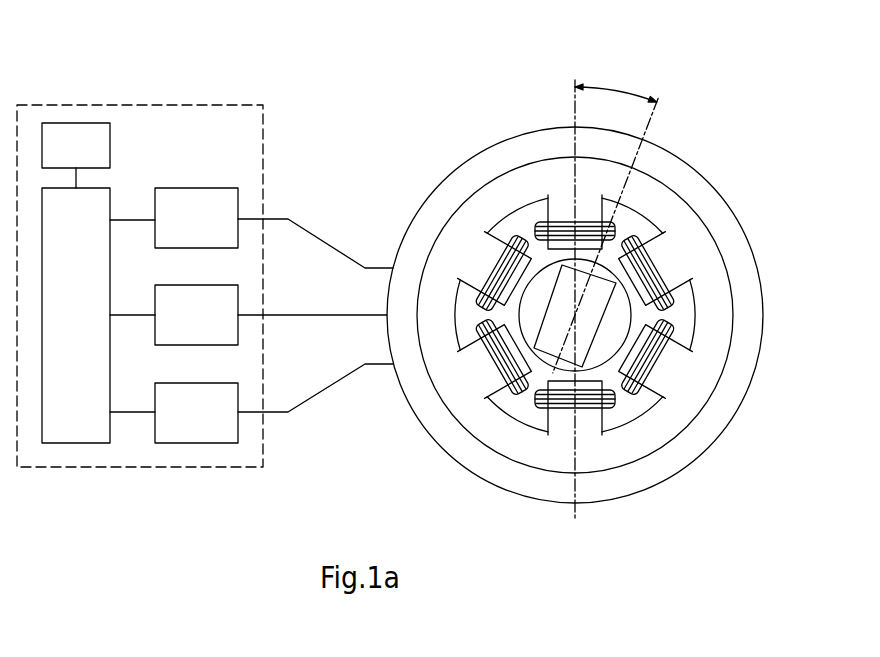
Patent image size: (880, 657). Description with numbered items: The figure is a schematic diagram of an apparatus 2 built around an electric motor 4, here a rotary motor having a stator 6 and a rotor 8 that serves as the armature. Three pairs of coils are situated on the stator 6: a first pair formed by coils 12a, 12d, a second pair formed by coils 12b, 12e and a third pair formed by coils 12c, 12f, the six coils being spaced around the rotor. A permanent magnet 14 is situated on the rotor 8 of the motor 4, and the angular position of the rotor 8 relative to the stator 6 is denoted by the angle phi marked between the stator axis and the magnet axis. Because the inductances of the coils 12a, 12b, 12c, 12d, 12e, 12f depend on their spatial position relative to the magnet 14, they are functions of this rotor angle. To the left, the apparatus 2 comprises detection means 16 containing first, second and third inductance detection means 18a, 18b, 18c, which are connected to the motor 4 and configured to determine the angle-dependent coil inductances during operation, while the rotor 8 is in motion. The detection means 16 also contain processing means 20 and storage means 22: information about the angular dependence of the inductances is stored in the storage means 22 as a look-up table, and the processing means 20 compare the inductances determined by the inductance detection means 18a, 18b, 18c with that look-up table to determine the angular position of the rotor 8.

The apparatus 2 is at (317, 82).
The electric motor 4 is at (697, 172).
The stator 6 is at (706, 257).
The rotor 8 is at (622, 318).
The coil 12a is at (538, 222).
The coil 12b is at (650, 232).
The coil 12c is at (672, 330).
The coil 12d is at (607, 413).
The coil 12e is at (503, 390).
The coil 12f is at (505, 238).
The permanent magnet 14 is at (597, 328).
The detection means 16 is at (82, 92).
The first inductance detection means 18a is at (213, 230).
The second inductance detection means 18b is at (213, 327).
The third inductance detection means 18c is at (213, 425).
The processing means 20 is at (89, 323).
The storage means 22 is at (89, 158).